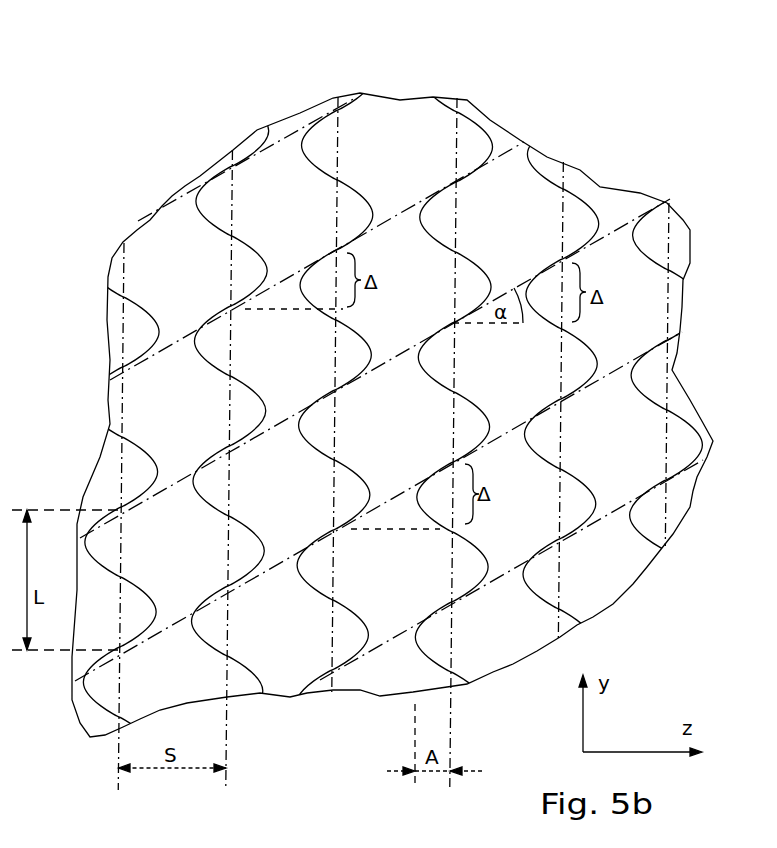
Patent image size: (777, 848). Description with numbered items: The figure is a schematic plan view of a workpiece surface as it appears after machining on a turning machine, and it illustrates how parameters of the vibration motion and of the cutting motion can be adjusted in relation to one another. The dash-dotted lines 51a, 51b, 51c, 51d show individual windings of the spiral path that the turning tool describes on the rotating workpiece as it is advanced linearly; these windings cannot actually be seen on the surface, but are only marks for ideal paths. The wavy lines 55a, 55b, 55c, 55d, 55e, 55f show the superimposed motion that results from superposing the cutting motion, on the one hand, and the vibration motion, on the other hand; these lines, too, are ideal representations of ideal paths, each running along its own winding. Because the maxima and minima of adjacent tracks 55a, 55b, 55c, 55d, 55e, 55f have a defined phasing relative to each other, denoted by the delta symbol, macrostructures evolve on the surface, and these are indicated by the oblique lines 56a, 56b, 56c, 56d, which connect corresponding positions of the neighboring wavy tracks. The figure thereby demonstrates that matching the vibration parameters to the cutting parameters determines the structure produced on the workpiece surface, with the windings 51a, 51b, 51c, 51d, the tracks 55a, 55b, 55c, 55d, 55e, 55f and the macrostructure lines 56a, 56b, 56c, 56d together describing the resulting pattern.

The dash-dotted line 51a is at (365, 100).
The dash-dotted line 51b is at (465, 101).
The dash-dotted line 51c is at (567, 172).
The dash-dotted line 51d is at (672, 215).
The line 55a is at (112, 298).
The line 55b is at (196, 205).
The line 55c is at (302, 145).
The line 55d is at (448, 102).
The line 55e is at (540, 157).
The line 55f is at (658, 262).
The line 56a is at (519, 143).
The line 56b is at (636, 198).
The line 56c is at (622, 368).
The line 56d is at (594, 523).